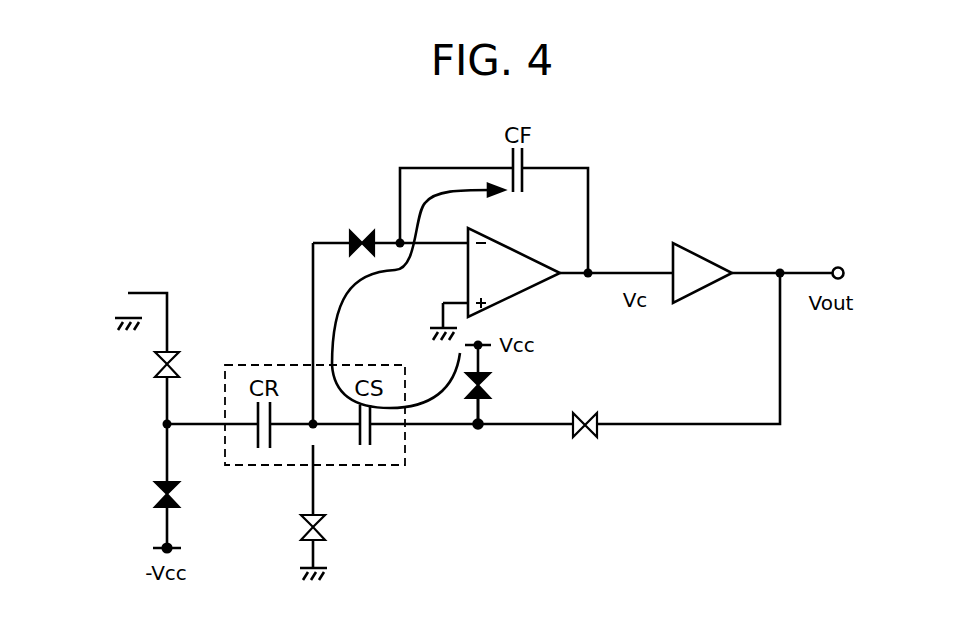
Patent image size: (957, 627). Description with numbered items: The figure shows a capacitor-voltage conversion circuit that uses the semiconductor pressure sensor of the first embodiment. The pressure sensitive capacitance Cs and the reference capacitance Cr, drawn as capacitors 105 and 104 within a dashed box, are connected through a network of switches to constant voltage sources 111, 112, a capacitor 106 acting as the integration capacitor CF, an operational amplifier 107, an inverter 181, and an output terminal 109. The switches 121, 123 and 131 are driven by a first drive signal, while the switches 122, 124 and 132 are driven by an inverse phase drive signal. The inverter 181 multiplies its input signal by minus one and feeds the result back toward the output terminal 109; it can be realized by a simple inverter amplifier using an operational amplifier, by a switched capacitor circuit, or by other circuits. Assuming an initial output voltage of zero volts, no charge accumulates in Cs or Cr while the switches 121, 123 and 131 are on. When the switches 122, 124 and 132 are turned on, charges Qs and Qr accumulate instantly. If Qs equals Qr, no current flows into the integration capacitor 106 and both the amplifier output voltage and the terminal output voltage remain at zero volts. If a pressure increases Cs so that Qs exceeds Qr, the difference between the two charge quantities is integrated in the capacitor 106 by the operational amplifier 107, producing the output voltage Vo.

The reference capacitor CR 104 is at (258, 448).
The sensor capacitor CS 105 is at (370, 445).
The capacitor 106 is at (530, 160).
The operational amplifier 107 is at (540, 290).
The output terminal 109 is at (840, 267).
The constant voltage source 111 is at (181, 548).
The constant voltage source 112 is at (485, 348).
The switch 121 is at (176, 350).
The switch 122 is at (158, 480).
The switch 123 is at (318, 540).
The switch 124 is at (348, 238).
The switch 131 is at (585, 437).
The switch 132 is at (483, 400).
The inverter 181 is at (700, 248).